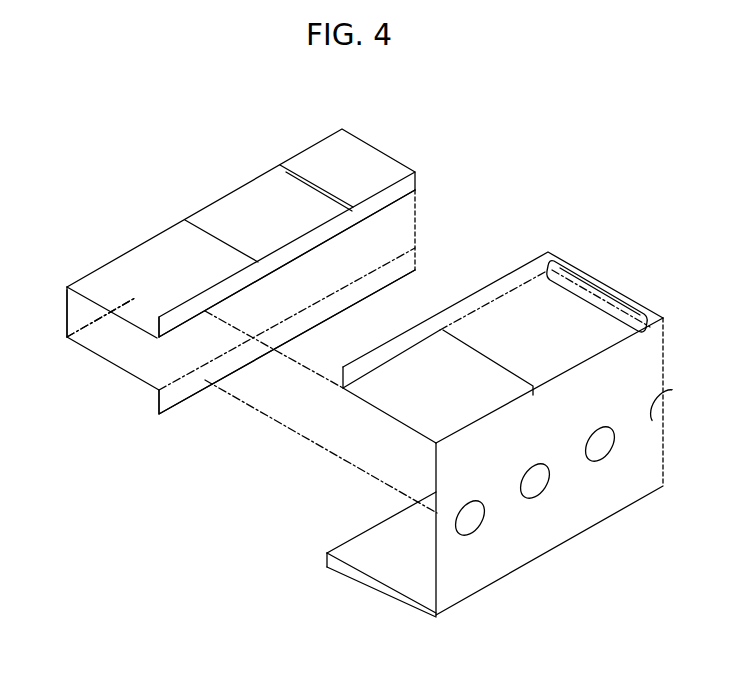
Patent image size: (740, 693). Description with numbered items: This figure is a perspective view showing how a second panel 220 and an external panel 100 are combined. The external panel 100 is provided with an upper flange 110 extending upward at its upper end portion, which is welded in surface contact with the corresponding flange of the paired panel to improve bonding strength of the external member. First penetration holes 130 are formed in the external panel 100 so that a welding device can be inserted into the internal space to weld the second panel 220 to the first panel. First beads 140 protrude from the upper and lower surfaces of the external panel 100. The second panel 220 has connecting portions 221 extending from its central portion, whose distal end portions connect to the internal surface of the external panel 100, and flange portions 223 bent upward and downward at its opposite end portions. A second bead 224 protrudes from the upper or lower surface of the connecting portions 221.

The external panel 100 is at (489, 426).
The upper flange 110 is at (518, 277).
The first penetration hole 130 is at (600, 449).
The first bead 140 is at (573, 315).
The second panel 220 is at (234, 299).
The connecting portion 221 is at (128, 314).
The flange portion 223 is at (193, 302).
The second bead 224 is at (235, 207).